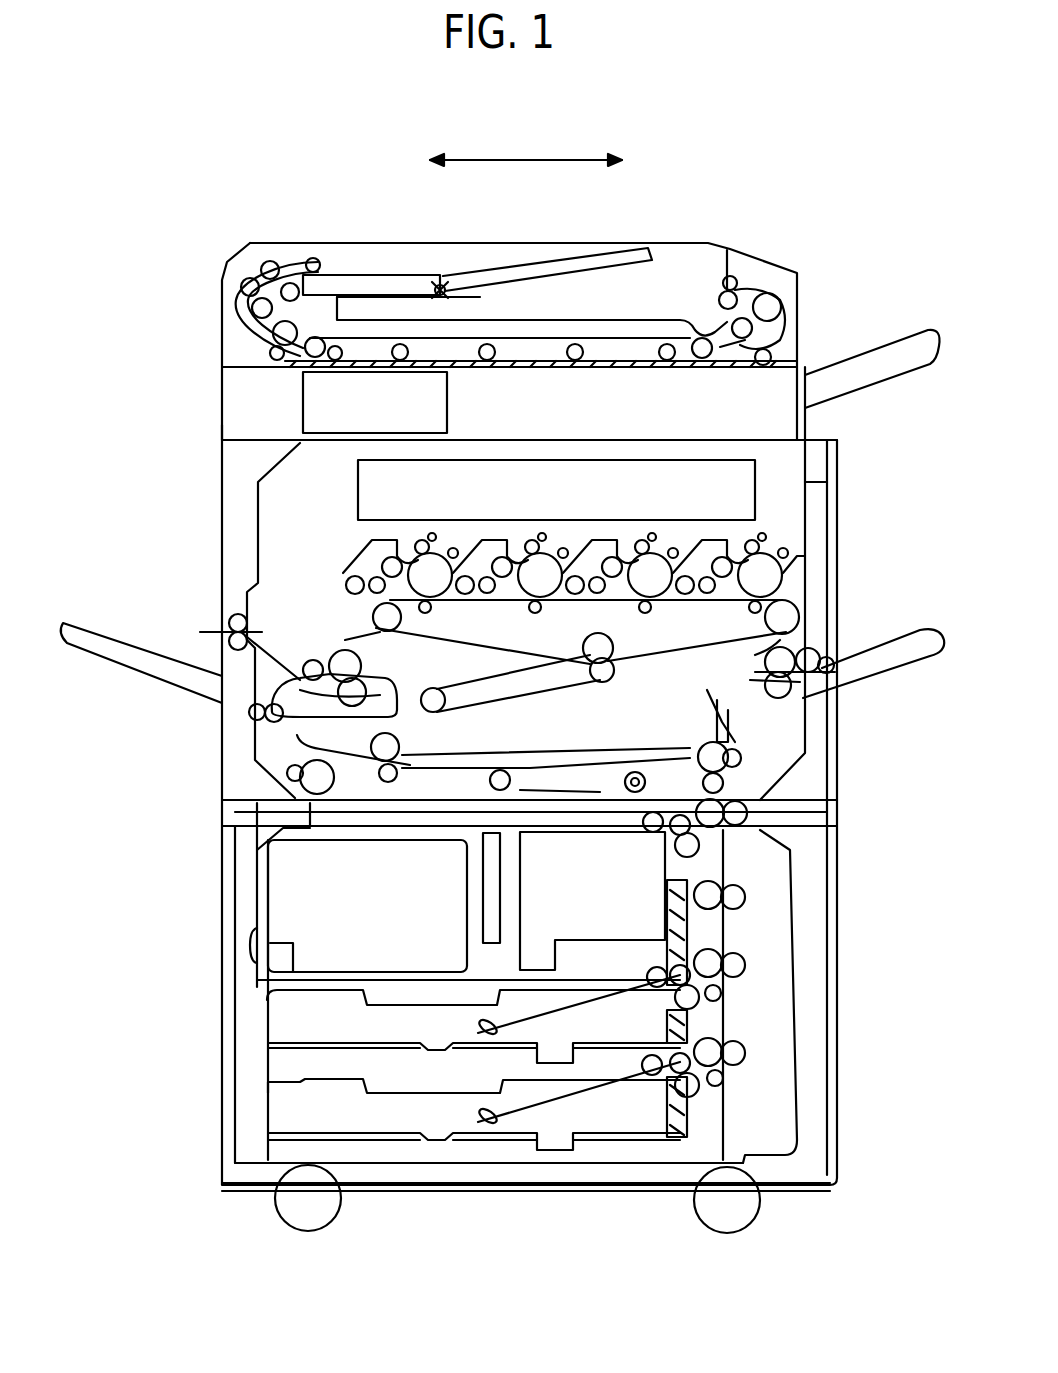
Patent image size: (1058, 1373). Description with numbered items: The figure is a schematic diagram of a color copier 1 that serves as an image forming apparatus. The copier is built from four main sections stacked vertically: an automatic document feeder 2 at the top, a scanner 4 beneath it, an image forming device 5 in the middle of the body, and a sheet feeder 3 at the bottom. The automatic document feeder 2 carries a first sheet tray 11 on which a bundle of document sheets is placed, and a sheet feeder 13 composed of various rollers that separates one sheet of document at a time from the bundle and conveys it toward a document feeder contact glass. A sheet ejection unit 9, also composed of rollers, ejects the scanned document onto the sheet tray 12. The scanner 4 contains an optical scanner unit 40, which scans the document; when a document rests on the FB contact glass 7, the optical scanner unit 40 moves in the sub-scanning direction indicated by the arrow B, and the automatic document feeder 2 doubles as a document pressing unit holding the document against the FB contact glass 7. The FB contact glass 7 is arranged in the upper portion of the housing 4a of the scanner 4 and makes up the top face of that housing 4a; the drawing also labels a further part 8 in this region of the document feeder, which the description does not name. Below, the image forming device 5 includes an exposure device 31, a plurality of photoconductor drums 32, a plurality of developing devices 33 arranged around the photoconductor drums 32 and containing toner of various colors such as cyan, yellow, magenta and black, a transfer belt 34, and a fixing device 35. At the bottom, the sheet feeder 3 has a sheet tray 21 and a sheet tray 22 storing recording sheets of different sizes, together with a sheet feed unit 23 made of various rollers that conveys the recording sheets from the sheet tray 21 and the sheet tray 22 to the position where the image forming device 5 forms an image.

The color copier 1 is at (745, 232).
The automatic document feeder 2 is at (218, 320).
The sheet feeder 3 is at (222, 978).
The scanner 4 is at (218, 406).
The housing 4a is at (216, 428).
The image forming device 5 is at (222, 717).
The FB contact glass 7 is at (592, 342).
The document reading position 8 is at (570, 336).
The sheet ejection unit 9 is at (718, 320).
The first sheet tray 11 is at (620, 262).
The sheet tray 12 is at (630, 318).
The sheet feeder 13 is at (247, 264).
The sheet tray 21 is at (495, 1148).
The sheet tray 22 is at (408, 1052).
The sheet feed unit 23 is at (742, 950).
The exposure device 31 is at (358, 488).
The photoconductor drums 32 is at (440, 595).
The developing devices 33 is at (467, 546).
The transfer belt 34 is at (462, 642).
The fixing device 35 is at (333, 650).
The optical scanner unit 40 is at (455, 406).
The sub-scanning direction B is at (570, 160).